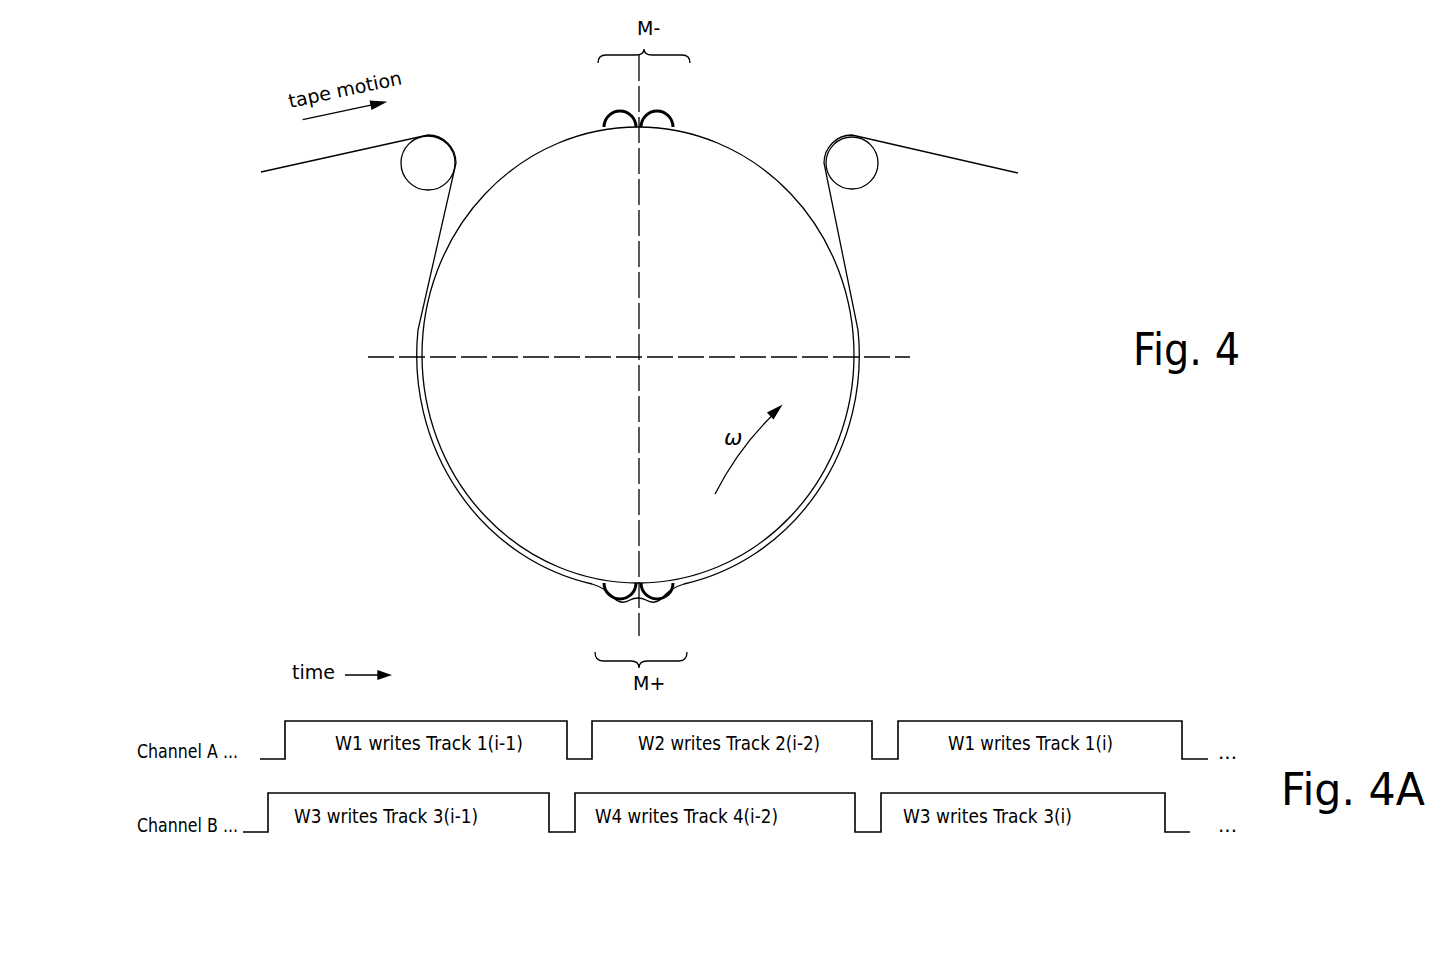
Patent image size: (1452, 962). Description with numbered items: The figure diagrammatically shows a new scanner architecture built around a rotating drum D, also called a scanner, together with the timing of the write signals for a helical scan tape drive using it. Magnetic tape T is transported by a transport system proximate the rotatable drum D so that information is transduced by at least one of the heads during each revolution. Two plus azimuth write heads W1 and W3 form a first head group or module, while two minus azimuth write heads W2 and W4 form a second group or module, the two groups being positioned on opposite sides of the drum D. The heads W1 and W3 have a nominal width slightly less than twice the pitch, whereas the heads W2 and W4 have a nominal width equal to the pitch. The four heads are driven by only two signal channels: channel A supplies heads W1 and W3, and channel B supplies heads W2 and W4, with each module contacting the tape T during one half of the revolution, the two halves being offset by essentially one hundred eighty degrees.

The rotating drum D is at (722, 146).
The magnetic tape T is at (930, 153).
The write head W1 is at (667, 600).
The write head W2 is at (623, 119).
The write head W3 is at (612, 600).
The write head W4 is at (659, 119).